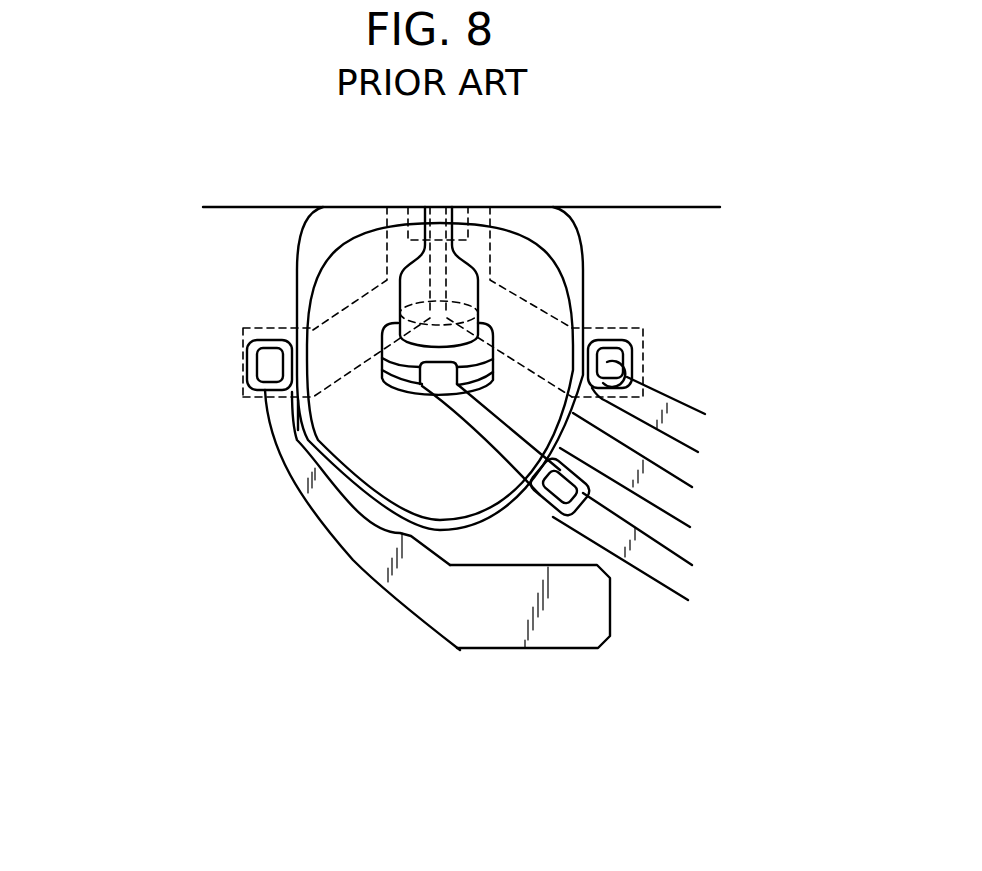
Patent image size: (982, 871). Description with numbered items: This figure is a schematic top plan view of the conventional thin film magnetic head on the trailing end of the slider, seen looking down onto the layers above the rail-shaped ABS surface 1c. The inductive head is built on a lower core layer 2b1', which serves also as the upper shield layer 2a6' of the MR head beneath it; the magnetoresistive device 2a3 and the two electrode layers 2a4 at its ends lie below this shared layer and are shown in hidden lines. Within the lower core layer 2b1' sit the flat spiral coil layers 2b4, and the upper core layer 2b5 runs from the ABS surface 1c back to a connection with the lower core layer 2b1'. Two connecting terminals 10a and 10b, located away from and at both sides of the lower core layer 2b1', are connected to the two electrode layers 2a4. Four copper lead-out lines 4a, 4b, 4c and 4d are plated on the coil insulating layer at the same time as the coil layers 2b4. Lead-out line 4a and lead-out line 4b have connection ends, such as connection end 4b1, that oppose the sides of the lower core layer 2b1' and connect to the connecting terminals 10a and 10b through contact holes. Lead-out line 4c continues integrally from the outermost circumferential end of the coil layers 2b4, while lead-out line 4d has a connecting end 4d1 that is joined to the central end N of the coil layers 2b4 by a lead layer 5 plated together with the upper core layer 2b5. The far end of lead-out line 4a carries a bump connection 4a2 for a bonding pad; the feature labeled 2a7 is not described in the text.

The ABS surface 1c is at (690, 198).
The magnetoresistive (MR) device 2a3 is at (472, 212).
The electrode layer 2a4 is at (505, 283).
The upper shield layer 2a6' is at (336, 368).
The lower core layer 2b1' is at (336, 368).
The rib 2a7 is at (310, 433).
The coil layer 2b4 is at (340, 263).
The upper core layer 2b5 is at (480, 300).
The central end N is at (410, 392).
The lead layer 5 is at (487, 427).
The connecting terminal 10a is at (247, 340).
The connecting terminal 10b is at (610, 340).
The lead-out line 4a is at (267, 377).
The bump connection 4a2 is at (563, 622).
The lead-out line 4b is at (687, 430).
The connection end 4b1 is at (608, 362).
The lead-out line 4c is at (673, 494).
The lead-out line 4d is at (680, 570).
The connecting end 4d1 is at (548, 507).